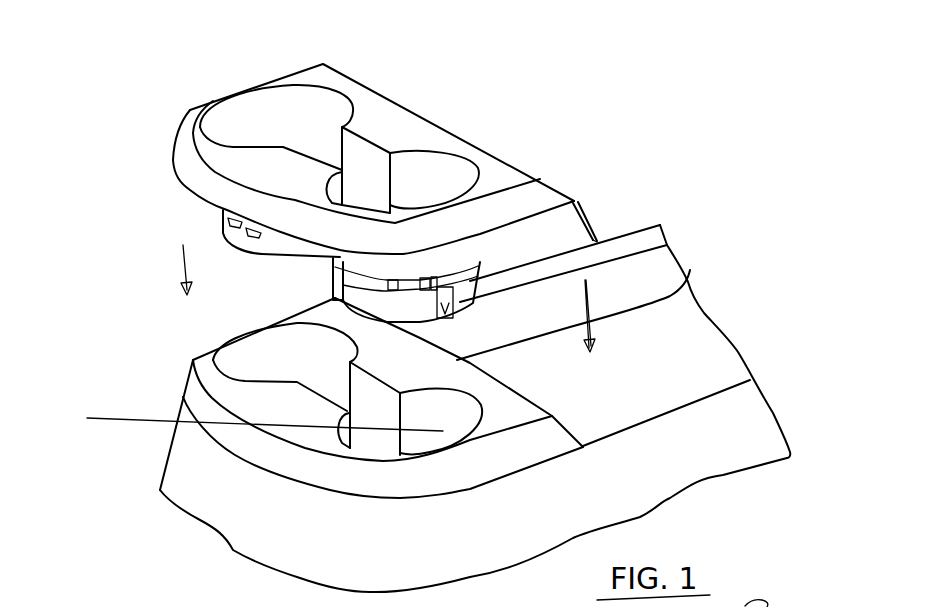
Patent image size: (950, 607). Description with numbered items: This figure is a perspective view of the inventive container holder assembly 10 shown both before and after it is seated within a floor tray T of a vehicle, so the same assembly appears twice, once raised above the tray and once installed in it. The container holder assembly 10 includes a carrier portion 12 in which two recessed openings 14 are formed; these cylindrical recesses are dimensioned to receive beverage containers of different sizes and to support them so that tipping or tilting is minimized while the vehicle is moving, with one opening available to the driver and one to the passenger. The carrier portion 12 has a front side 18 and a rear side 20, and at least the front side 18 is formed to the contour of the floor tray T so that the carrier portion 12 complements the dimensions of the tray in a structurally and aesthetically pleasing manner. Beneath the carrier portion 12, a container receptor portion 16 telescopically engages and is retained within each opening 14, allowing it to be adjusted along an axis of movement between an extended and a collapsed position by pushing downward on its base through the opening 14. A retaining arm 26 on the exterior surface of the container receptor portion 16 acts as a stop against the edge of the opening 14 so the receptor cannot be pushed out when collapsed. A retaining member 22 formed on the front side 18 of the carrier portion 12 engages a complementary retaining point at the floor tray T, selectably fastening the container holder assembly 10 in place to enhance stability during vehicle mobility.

The container holder assembly 10 is at (527, 135).
The carrier portion 12 is at (413, 130).
The recessed opening 14 is at (278, 113).
The container receptor portion 16 is at (357, 293).
The front side 18 is at (227, 215).
The rear side 20 is at (597, 237).
The retaining member 22 is at (217, 215).
The retaining arm 26 is at (453, 318).
The floor tray T is at (723, 437).